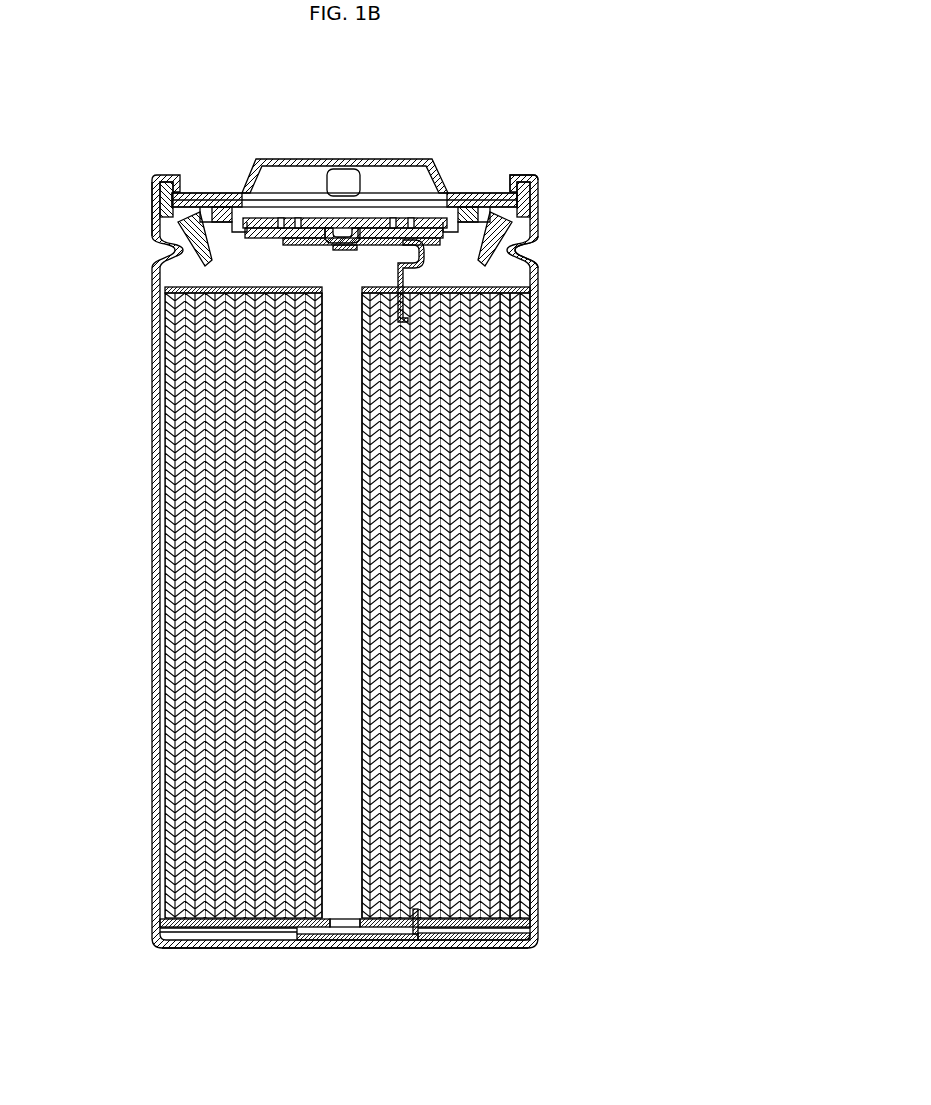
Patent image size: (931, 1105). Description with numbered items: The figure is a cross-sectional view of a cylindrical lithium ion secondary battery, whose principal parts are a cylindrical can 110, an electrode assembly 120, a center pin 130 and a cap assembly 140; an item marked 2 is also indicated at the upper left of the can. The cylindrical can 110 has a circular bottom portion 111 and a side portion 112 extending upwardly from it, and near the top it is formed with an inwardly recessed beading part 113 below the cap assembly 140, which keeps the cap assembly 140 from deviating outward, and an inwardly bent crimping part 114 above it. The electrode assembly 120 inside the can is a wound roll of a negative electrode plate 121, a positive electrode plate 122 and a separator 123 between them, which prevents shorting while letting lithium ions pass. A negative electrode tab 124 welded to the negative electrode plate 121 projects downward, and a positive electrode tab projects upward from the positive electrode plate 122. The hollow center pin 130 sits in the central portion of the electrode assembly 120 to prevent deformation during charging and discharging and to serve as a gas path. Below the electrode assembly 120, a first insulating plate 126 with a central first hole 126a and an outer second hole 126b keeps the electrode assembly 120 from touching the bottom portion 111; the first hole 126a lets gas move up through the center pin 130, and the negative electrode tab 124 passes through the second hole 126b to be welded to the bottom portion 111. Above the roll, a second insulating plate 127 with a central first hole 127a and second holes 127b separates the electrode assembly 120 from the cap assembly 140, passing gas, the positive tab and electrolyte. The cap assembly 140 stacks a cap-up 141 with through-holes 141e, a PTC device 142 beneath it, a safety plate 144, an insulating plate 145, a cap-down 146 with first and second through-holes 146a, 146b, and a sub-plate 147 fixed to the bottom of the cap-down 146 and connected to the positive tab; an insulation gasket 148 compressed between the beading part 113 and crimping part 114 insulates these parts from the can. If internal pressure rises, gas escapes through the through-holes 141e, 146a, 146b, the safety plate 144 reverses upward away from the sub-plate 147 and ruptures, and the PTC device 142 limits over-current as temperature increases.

The external terminal contact 2 is at (121, 208).
The cylindrical can 110 is at (341, 554).
The bottom portion 111 is at (305, 948).
The side portion 112 is at (538, 716).
The beading part 113 is at (509, 242).
The crimping part 114 is at (518, 173).
The electrode assembly 120 is at (394, 605).
The negative electrode plate 121 is at (521, 346).
The positive electrode plate 122 is at (501, 400).
The separator 123 is at (511, 366).
The negative electrode tab 124 is at (345, 924).
The first insulating plate 126 is at (365, 983).
The first hole 126a is at (372, 941).
The second hole 126b is at (416, 935).
The second insulating plate 127 is at (343, 287).
The first hole 127a is at (322, 289).
The second holes 127b is at (478, 270).
The center pin 130 is at (367, 633).
The cap assembly 140 is at (292, 184).
The cap-up 141 is at (368, 160).
The through-holes 141e is at (213, 193).
The positive temperature coefficient (PTC) device 142 is at (163, 176).
The safety plate 144 is at (406, 207).
The insulating plate 145 is at (477, 193).
The cap-down 146 is at (300, 219).
The first through-hole 146a is at (333, 246).
The second through-hole 146b is at (240, 243).
The sub-plate 147 is at (344, 154).
The insulation gasket 148 is at (509, 182).